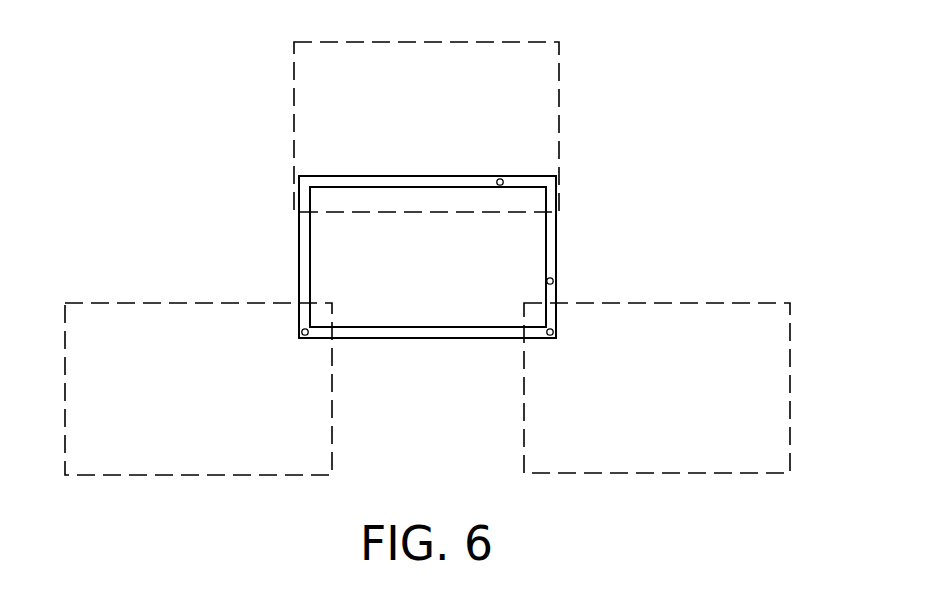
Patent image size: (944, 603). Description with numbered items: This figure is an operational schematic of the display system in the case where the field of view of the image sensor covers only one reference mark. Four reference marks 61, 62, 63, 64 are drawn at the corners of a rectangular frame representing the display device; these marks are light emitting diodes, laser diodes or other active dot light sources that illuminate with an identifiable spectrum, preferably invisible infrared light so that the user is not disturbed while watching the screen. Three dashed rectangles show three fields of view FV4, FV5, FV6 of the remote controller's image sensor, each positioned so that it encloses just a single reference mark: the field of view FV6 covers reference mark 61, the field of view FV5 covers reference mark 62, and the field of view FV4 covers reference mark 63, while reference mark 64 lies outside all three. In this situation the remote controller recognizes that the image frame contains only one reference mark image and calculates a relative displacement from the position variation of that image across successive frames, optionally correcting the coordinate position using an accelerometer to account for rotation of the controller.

The reference mark 61 is at (302, 330).
The reference mark 62 is at (503, 181).
The reference mark 63 is at (553, 331).
The reference mark 64 is at (552, 279).
The field of view FV4 is at (760, 303).
The field of view FV5 is at (294, 90).
The field of view FV6 is at (103, 303).